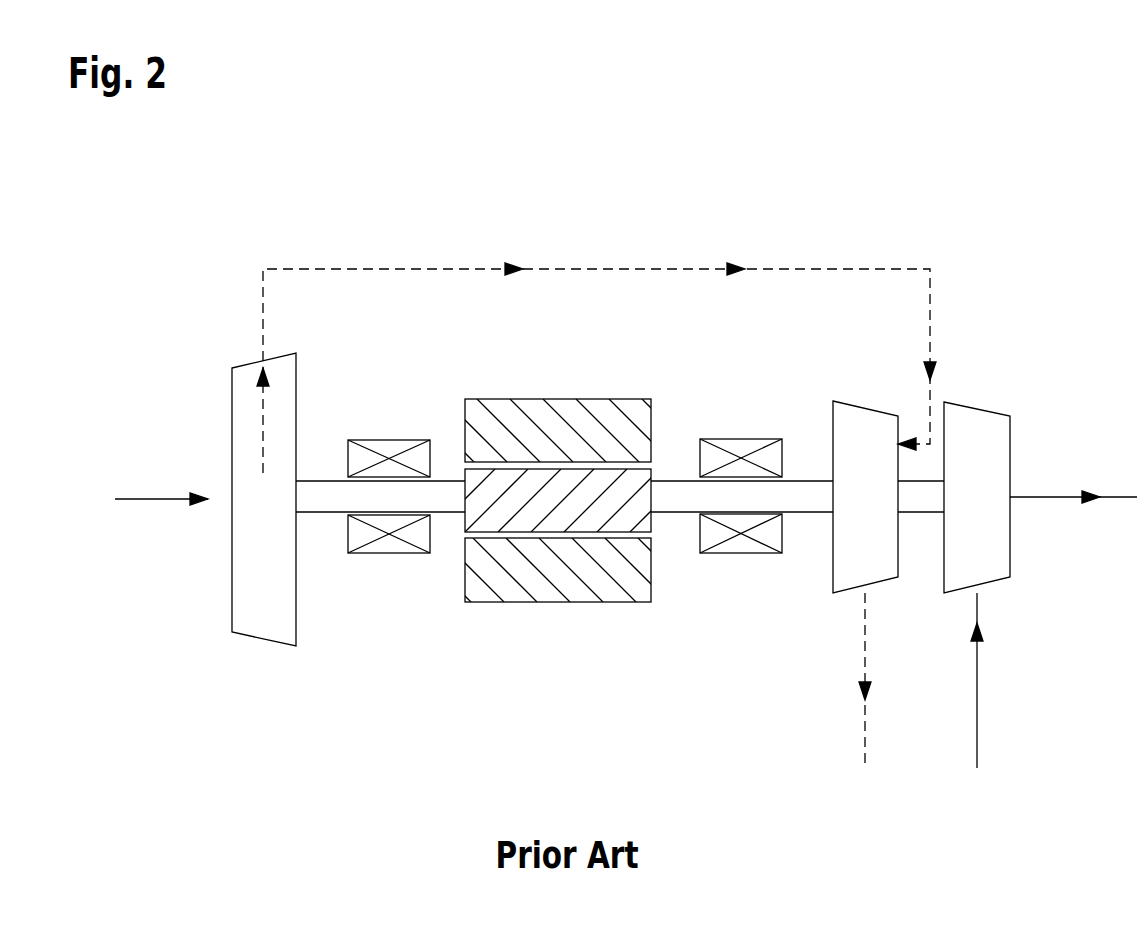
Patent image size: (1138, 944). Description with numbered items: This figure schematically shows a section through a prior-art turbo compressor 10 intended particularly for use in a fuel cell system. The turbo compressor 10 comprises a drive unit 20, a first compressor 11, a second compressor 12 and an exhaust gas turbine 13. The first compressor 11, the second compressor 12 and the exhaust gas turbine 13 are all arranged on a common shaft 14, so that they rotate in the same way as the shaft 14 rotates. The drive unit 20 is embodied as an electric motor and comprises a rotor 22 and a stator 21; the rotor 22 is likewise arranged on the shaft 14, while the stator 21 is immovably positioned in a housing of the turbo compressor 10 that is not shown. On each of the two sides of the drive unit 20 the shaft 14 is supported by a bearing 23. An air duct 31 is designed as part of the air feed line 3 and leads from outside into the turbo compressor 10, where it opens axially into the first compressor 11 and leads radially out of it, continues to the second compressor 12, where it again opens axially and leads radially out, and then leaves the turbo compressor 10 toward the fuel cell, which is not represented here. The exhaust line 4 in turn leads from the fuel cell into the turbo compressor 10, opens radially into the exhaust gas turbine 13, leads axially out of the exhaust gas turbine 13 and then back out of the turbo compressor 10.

The air feed line 3 is at (135, 498).
The exhaust line 4 is at (1112, 500).
The turbo compressor 10 is at (1007, 272).
The first compressor 11 is at (232, 578).
The second compressor 12 is at (868, 405).
The exhaust gas turbine 13 is at (978, 408).
The shaft 14 is at (685, 513).
The drive unit 20 is at (552, 556).
The stator 21 is at (487, 588).
The rotor 22 is at (548, 492).
The bearing 23 is at (373, 553).
The air duct 31 is at (767, 268).